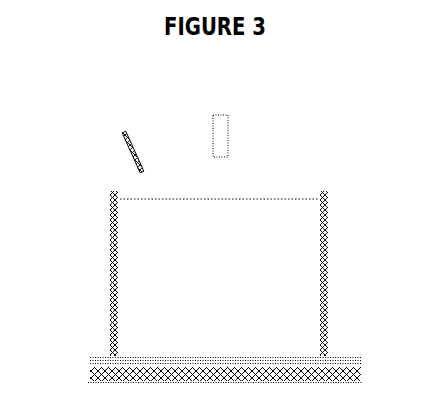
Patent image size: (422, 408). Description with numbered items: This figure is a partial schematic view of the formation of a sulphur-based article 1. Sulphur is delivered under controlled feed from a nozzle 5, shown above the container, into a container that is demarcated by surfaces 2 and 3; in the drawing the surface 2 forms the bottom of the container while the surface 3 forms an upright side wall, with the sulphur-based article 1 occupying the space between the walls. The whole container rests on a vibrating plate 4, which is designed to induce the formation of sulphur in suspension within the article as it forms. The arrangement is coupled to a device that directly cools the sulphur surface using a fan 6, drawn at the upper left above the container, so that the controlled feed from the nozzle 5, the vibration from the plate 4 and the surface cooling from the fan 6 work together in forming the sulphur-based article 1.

The sulphur-based article 1 is at (307, 245).
The surface 2 is at (133, 356).
The surface 3 is at (110, 278).
The vibrating plate 4 is at (338, 363).
The nozzle 5 is at (223, 142).
The fan 6 is at (124, 156).